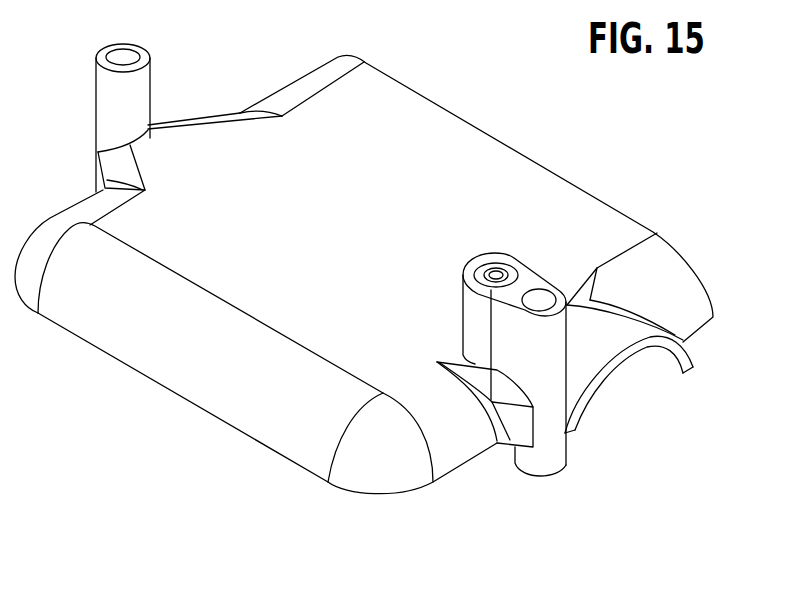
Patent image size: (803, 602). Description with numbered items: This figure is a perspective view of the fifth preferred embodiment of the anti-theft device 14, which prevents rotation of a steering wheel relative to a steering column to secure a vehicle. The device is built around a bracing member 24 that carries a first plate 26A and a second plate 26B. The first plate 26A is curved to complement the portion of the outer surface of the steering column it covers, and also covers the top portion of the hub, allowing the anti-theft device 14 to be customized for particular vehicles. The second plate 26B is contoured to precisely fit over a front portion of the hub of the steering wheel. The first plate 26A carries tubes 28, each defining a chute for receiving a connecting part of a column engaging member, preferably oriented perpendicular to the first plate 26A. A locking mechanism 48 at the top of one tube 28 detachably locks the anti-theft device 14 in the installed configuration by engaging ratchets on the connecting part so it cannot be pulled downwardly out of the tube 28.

The anti-theft device 14 is at (416, 188).
The bracing member 24 is at (469, 476).
The first plate 26A is at (533, 213).
The second plate 26B is at (231, 369).
The tube 28 is at (130, 100).
The locking mechanism 48 is at (500, 274).